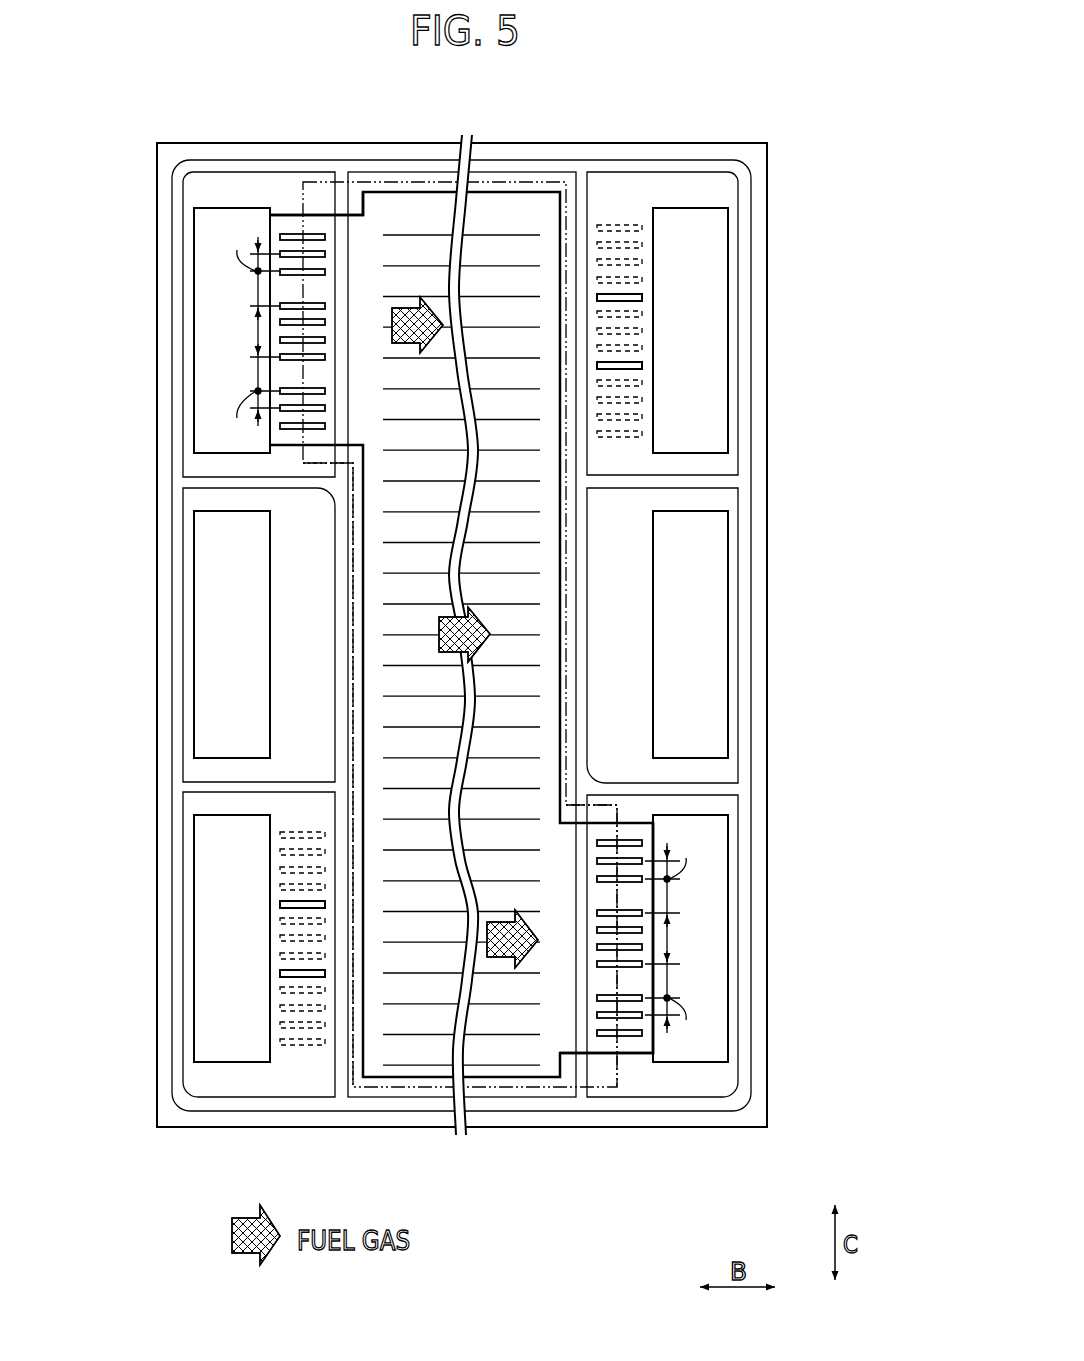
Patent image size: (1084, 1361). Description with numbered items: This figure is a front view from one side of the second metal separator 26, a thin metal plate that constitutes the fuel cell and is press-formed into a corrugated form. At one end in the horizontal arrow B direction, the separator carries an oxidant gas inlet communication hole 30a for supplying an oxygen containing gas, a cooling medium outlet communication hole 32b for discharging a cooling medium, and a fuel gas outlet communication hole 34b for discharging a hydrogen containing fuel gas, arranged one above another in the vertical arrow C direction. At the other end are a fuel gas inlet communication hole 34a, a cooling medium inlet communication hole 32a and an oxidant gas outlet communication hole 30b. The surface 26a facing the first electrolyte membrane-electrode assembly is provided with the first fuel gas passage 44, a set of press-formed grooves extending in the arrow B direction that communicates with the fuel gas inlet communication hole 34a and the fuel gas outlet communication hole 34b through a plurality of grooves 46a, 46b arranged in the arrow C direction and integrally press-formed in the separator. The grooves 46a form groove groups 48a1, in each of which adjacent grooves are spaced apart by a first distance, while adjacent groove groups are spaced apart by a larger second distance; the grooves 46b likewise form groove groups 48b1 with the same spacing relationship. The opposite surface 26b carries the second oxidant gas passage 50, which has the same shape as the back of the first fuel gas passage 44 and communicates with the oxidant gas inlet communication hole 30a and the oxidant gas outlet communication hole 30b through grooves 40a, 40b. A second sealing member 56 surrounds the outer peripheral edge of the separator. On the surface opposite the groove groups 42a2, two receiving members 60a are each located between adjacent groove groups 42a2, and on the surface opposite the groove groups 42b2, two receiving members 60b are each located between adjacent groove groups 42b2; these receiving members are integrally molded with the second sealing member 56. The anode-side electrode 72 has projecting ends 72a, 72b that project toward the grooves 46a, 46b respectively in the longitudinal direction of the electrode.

The second metal separator 26 is at (563, 77).
The surface of the second metal separator 26a is at (202, 1133).
The surface of the second metal separator 26b is at (277, 1127).
The oxidant gas inlet communication hole 30a is at (718, 318).
The oxidant gas outlet communication hole 30b is at (203, 940).
The cooling medium inlet communication hole 32a is at (208, 572).
The cooling medium outlet communication hole 32b is at (718, 573).
The fuel gas inlet communication hole 34a is at (203, 303).
The fuel gas outlet communication hole 34b is at (717, 960).
The grooves 40a is at (628, 226).
The grooves 40b is at (283, 866).
The groove groups 42a2 is at (608, 220).
The groove groups 42b2 is at (300, 1050).
The first fuel gas passage 44 is at (410, 653).
The grooves 46a is at (290, 233).
The grooves 46b is at (597, 842).
The groove groups 48a1 is at (344, 243).
The groove groups 48b1 is at (578, 914).
The second oxidant gas passage 50 is at (410, 615).
The second sealing member 56 is at (648, 143).
The receiving members 60a is at (642, 296).
The receiving members 60b is at (278, 904).
The anode-side electrode 72 is at (413, 180).
The projecting end 72a is at (328, 463).
The projecting end 72b is at (588, 812).